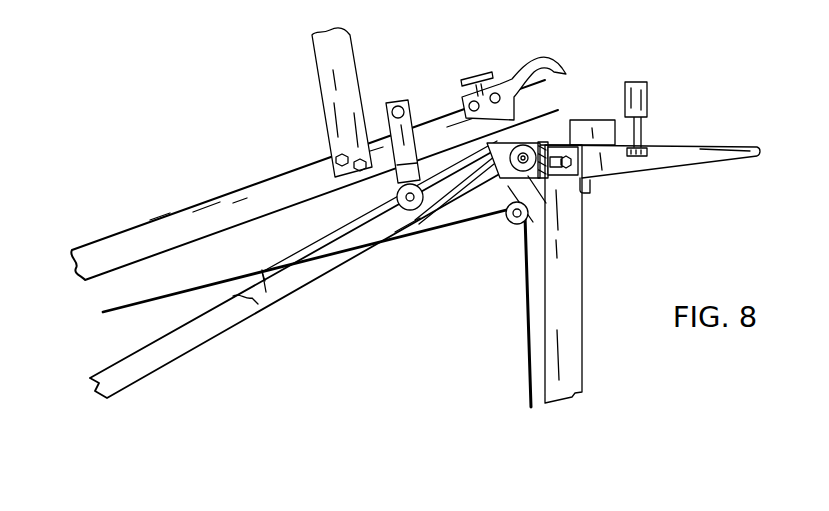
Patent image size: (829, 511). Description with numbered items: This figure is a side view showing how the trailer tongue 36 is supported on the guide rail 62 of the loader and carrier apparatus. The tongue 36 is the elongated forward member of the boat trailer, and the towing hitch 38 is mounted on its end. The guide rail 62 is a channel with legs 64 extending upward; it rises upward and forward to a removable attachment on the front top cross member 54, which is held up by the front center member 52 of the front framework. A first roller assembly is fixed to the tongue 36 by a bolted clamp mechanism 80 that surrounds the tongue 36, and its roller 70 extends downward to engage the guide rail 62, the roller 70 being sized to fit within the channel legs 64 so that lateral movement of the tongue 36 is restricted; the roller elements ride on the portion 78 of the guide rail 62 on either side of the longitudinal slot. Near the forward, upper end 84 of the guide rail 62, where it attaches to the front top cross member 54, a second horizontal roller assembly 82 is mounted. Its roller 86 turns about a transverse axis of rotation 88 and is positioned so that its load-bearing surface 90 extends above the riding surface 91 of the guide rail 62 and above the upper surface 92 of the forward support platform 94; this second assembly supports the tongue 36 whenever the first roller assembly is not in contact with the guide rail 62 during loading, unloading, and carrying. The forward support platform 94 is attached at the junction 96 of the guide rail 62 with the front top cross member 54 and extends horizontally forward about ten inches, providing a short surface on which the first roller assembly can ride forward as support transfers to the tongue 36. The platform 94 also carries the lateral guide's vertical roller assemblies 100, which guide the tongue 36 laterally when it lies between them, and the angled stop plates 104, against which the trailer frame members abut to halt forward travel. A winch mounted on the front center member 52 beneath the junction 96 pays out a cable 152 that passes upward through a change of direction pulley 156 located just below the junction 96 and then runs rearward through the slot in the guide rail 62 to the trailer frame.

The tongue 36 is at (247, 187).
The towing hitch 38 is at (534, 64).
The front center member 52 is at (570, 268).
The front top cross member 54 is at (580, 185).
The guide rail 62 is at (313, 247).
The legs 64 is at (263, 275).
The roller 70 is at (399, 193).
The portion of guide rail 78 is at (342, 233).
The bolted clamp mechanism 80 is at (404, 120).
The second horizontal roller assembly 82 is at (535, 122).
The forward, upper end 84 is at (449, 223).
The roller 86 is at (518, 147).
The transverse axis of rotation 88 is at (521, 165).
The load-bearing surface 90 is at (530, 140).
The riding surface 91 is at (458, 153).
The upper surface 92 is at (658, 143).
The forward support platform 94 is at (706, 152).
The junction 96 is at (493, 300).
The vertical roller assemblies 100 is at (652, 100).
The angled stop plates 104 is at (587, 130).
The cable 152 is at (413, 234).
The change of direction pulley 156 is at (512, 226).